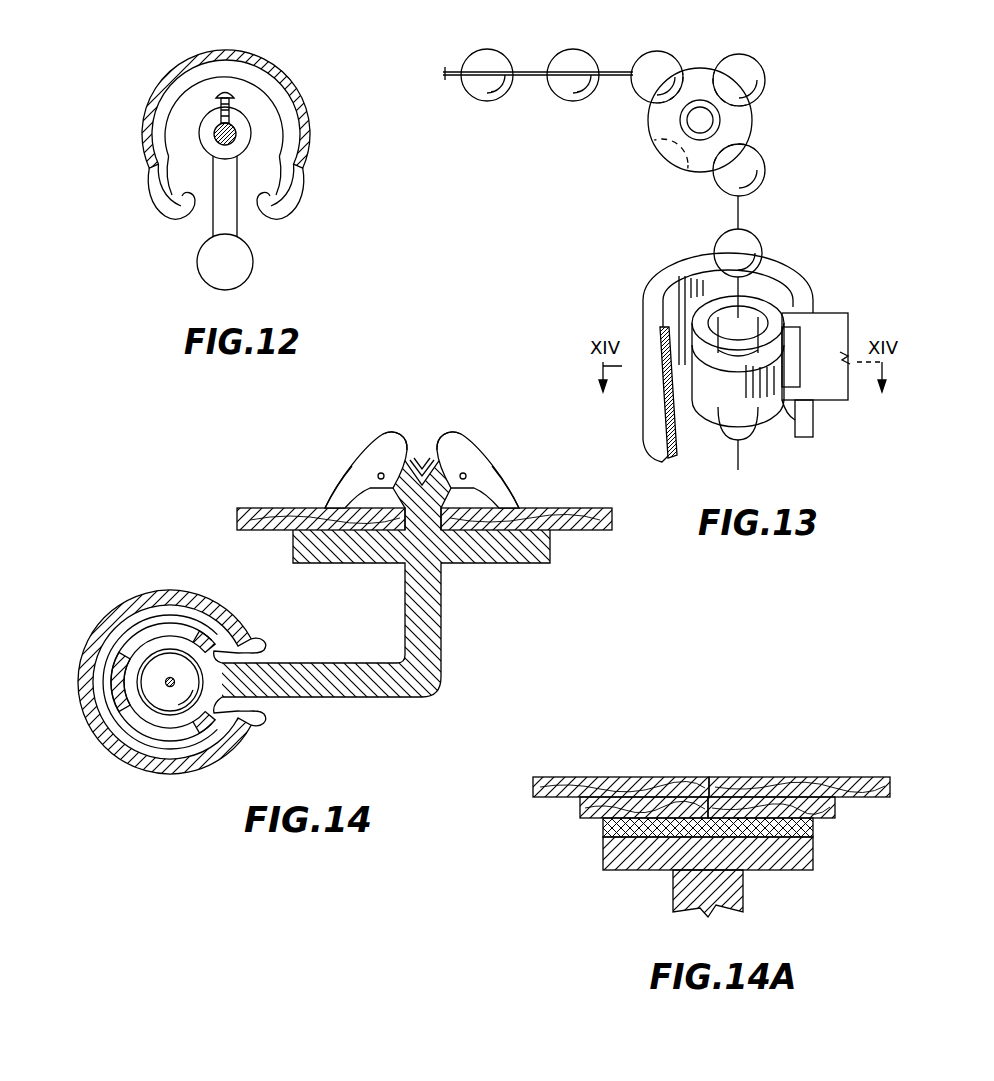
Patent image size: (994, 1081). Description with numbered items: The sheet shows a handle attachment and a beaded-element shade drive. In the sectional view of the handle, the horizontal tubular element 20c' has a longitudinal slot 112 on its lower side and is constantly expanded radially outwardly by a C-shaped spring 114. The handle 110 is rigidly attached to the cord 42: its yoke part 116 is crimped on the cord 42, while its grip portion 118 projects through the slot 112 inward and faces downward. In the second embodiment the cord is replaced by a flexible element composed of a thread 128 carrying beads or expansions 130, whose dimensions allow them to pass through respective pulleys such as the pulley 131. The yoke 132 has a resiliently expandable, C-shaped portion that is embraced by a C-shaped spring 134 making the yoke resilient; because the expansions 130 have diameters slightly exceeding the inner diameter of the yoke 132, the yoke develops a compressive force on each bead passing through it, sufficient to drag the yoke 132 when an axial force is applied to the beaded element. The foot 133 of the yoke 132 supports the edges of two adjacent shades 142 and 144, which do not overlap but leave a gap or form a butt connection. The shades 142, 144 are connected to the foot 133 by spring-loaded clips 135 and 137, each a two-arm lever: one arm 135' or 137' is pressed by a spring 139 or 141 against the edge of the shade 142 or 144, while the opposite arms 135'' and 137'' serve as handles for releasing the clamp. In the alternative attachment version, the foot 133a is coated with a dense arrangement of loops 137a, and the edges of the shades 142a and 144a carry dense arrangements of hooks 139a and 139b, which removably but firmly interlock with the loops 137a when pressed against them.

In FIG. 12, the cord 42 is at (219, 130).
In FIG. 12, the yoke part 116 is at (205, 138).
In FIG. 12, the C-shaped spring 114 is at (170, 149).
In FIG. 12, the handle 110 is at (176, 233).
In FIG. 12, the horizontal tubular element 20c' is at (258, 134).
In FIG. 12, the longitudinal slot 112 is at (244, 204).
In FIG. 12, the grip portion 118 is at (236, 264).
In FIG. 13, the thread 128 is at (620, 77).
In FIG. 14, the thread 128 is at (162, 688).
In FIG. 13, the beads or expansions 130 is at (660, 53).
In FIG. 14, the beads or expansions 130 is at (116, 616).
In FIG. 13, the pulley 131 is at (750, 127).
In FIG. 13, the yoke 132 is at (763, 304).
In FIG. 14, the yoke 132 is at (172, 726).
In FIG. 13, the C-shaped spring 134 is at (705, 390).
In FIG. 14, the C-shaped spring 134 is at (172, 625).
In FIG. 14, the foot 133 is at (483, 557).
In FIG. 14, the spring-loaded clip 135 is at (342, 470).
In FIG. 14, the arm 135' is at (288, 469).
In FIG. 14, the opposite arm 135'' is at (361, 429).
In FIG. 14, the spring-loaded clip 137 is at (506, 470).
In FIG. 14, the arm 137' is at (562, 483).
In FIG. 14, the opposite arm 137'' is at (492, 440).
In FIG. 14, the spring 139 is at (418, 462).
In FIG. 14, the spring 141 is at (435, 450).
In FIG. 14, the shade 142 is at (287, 517).
In FIG. 14, the shade 144 is at (572, 533).
In FIG. 14A, the shade 142a is at (658, 782).
In FIG. 14A, the shade 144a is at (742, 780).
In FIG. 14A, the hooks 139a is at (590, 816).
In FIG. 14A, the hooks 139b is at (829, 818).
In FIG. 14A, the loops 137a is at (610, 828).
In FIG. 14A, the foot 133a is at (657, 858).